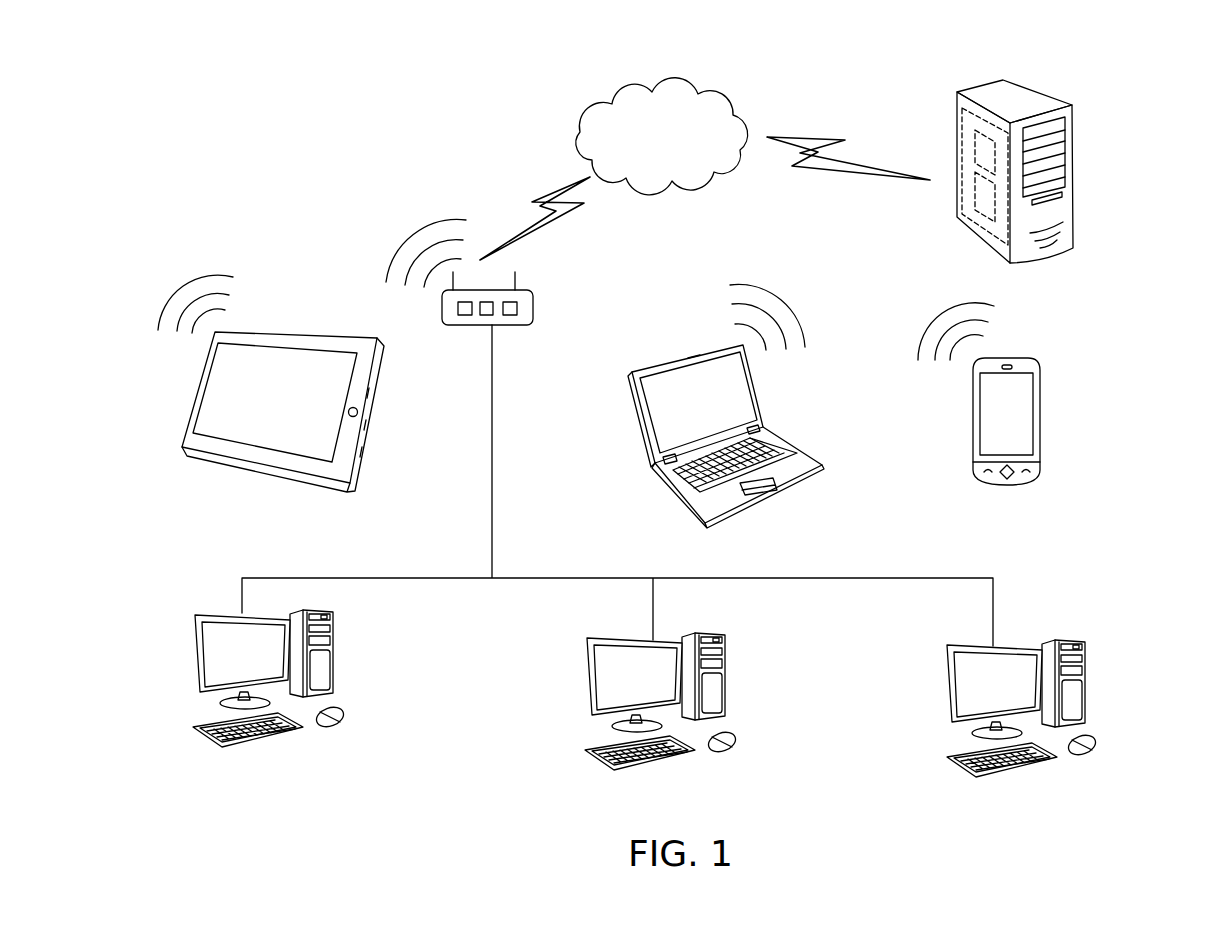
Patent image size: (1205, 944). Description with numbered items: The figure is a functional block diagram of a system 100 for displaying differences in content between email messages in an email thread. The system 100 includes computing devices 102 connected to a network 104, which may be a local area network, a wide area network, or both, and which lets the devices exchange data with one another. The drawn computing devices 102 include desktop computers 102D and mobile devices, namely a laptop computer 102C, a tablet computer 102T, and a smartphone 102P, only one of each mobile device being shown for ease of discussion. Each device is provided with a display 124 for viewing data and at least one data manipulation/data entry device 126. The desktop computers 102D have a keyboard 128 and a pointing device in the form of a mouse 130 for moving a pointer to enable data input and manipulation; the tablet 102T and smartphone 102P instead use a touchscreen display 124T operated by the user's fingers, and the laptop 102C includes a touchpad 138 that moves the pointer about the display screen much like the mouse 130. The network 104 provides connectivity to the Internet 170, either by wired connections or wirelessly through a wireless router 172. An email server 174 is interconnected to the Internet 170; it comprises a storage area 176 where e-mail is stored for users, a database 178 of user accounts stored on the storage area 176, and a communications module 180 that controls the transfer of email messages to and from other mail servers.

The system 100 is at (1118, 92).
The computing devices 102 is at (367, 803).
The laptop computer 102C is at (787, 487).
The desktop computers 102D is at (353, 652).
The smartphones 102P is at (973, 467).
The tablet computers 102T is at (200, 458).
The network 104 is at (977, 573).
The display 124 is at (665, 420).
The touchscreen display 124T is at (362, 416).
The data manipulation/data entry device 126 is at (684, 614).
The keyboard 128 is at (760, 444).
The mouse 130 is at (730, 743).
The touchpad 138 is at (752, 481).
The Internet 170 is at (680, 92).
The wireless router 172 is at (535, 303).
The email server 174 is at (980, 150).
The storage area 176 is at (962, 113).
The database 178 is at (976, 148).
The communications module 180 is at (982, 210).